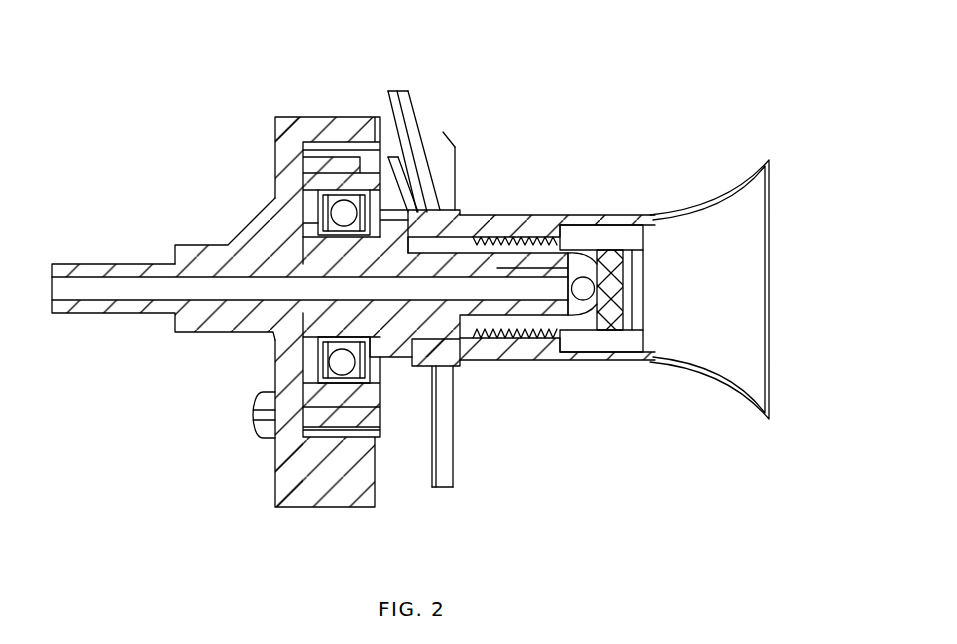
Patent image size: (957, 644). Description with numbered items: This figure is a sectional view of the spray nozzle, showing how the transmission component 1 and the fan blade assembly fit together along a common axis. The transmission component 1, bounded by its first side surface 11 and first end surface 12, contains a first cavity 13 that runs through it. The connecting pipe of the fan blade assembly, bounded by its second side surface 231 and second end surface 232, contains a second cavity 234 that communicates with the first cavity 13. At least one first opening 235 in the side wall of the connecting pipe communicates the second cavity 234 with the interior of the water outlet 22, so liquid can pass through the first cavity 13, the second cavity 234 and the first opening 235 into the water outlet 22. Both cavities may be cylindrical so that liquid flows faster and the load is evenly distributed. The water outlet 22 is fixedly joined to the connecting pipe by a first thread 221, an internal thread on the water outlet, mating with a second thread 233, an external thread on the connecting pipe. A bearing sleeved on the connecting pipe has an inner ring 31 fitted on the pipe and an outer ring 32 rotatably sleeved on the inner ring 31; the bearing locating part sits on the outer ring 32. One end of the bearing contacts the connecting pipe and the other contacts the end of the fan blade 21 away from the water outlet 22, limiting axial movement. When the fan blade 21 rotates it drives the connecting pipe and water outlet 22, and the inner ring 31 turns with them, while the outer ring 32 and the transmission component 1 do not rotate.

The transmission component 1 is at (203, 245).
The first side surface 11 is at (481, 308).
The first end surface 12 is at (568, 313).
The first cavity 13 is at (121, 290).
The fan blade 21 is at (432, 135).
The water outlet 22 is at (413, 330).
The inner ring 31 is at (338, 340).
The outer ring 32 is at (303, 258).
The first thread 221 is at (575, 242).
The second side surface 231 is at (582, 262).
The second end surface 232 is at (614, 252).
The second thread 233 is at (531, 336).
The second cavity 234 is at (545, 325).
The first opening 235 is at (598, 303).